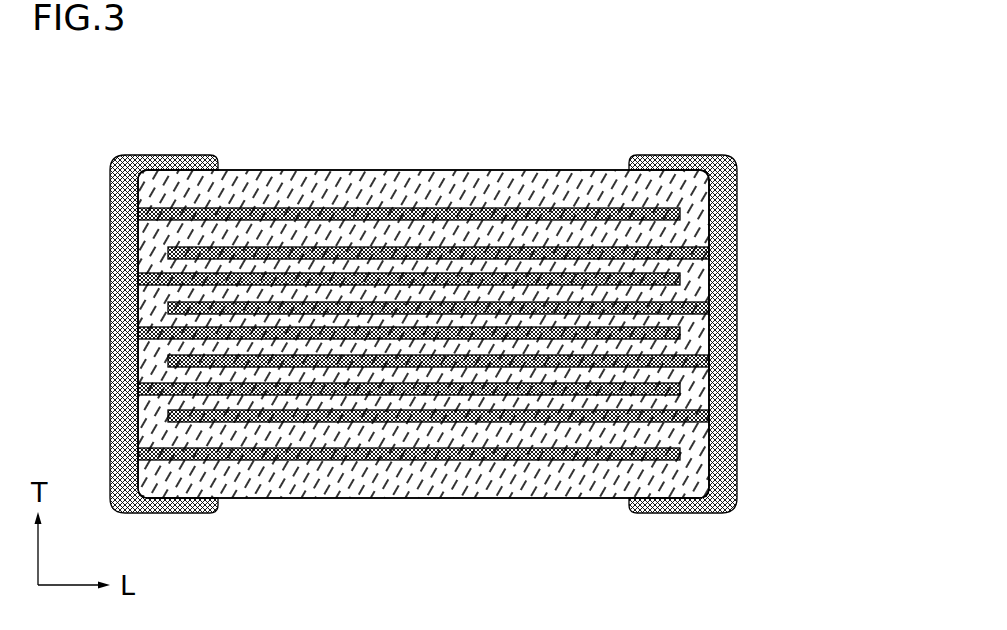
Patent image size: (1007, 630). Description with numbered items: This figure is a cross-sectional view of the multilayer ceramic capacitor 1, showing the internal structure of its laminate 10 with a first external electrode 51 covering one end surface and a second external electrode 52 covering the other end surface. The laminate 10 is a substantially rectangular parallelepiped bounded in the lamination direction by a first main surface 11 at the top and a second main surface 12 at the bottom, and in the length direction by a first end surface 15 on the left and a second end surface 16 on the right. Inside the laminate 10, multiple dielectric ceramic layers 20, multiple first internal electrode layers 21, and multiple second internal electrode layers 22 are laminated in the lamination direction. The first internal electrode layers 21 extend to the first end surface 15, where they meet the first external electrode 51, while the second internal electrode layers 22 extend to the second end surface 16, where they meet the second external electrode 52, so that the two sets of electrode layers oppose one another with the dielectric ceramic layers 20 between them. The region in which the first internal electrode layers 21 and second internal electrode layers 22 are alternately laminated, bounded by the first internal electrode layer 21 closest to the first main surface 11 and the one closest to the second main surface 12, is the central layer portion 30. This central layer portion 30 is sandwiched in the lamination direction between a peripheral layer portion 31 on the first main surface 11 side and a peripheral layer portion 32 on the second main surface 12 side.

The multilayer ceramic capacitor 1 is at (455, 310).
The laminate 10 is at (455, 330).
The first main surface 11 is at (255, 170).
The second main surface 12 is at (584, 498).
The first end surface 15 is at (138, 362).
The second end surface 16 is at (712, 390).
The dielectric ceramic layers 20 is at (423, 335).
The first internal electrode layers 21 is at (365, 328).
The second internal electrode layers 22 is at (475, 305).
The central layer portion 30 is at (825, 210).
The peripheral layer portion 31 is at (737, 170).
The peripheral layer portion 32 is at (712, 459).
The first external electrode 51 is at (122, 205).
The second external electrode 52 is at (686, 158).